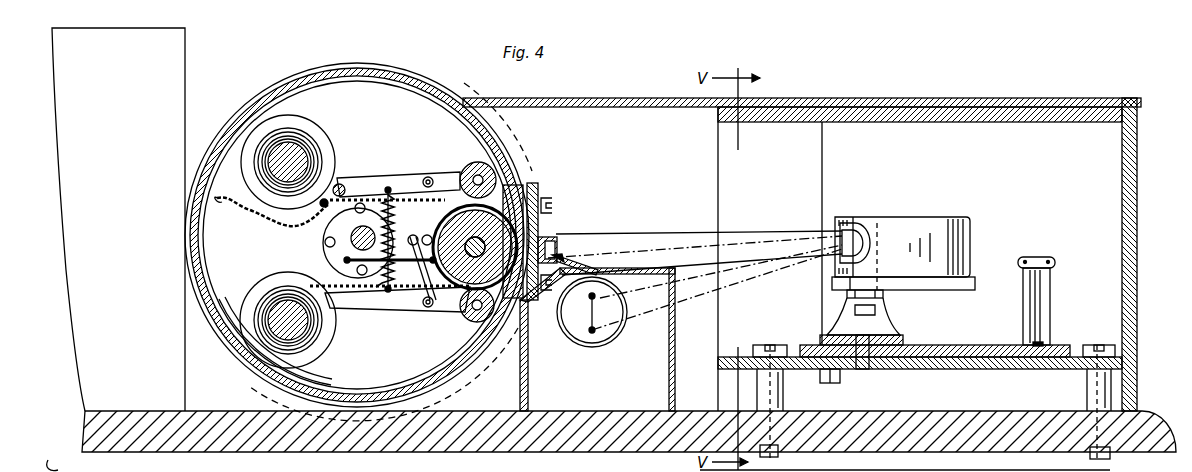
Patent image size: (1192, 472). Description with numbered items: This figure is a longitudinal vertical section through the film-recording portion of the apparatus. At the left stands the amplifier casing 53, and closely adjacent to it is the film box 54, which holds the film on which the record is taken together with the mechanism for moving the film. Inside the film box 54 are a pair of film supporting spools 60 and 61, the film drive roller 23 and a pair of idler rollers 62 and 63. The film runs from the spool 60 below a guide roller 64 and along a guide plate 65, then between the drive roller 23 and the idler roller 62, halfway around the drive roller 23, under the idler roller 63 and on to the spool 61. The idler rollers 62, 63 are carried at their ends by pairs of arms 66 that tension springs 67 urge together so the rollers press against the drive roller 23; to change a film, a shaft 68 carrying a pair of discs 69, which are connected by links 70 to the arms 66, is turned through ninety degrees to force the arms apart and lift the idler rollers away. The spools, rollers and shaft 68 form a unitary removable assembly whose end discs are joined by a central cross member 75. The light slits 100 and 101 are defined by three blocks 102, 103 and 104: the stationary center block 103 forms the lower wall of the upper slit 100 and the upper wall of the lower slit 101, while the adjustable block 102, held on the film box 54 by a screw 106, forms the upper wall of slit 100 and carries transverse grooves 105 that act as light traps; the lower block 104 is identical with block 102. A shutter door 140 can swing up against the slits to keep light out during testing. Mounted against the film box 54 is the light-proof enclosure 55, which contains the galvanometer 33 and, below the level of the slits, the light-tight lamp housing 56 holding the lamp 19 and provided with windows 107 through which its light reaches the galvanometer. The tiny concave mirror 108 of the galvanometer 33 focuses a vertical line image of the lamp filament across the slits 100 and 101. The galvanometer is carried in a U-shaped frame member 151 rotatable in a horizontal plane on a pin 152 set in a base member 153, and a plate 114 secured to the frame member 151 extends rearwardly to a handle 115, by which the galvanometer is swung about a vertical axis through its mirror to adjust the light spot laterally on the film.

The lamp 19 is at (605, 343).
The film drive roller 23 is at (429, 308).
The galvanometer 33 is at (923, 217).
The amplifier casing 53 is at (185, 66).
The film box 54 is at (352, 63).
The light-proof enclosure 55 is at (1134, 187).
The lamp housing 56 is at (676, 384).
The film supporting spool 60 is at (316, 125).
The film supporting spool 61 is at (258, 295).
The idler roller 62 is at (478, 164).
The idler roller 63 is at (478, 321).
The guide roller 64 is at (341, 184).
The guide plate 65 is at (322, 207).
The arms 66 is at (378, 178).
The tension springs 67 is at (425, 180).
The shaft 68 is at (420, 268).
The discs 69 is at (424, 235).
The links 70 is at (388, 294).
The central cross member 75 is at (345, 247).
The upper light slit 100 is at (556, 240).
The lower light slit 101 is at (560, 244).
The block 102 is at (546, 216).
The center block 103 is at (545, 305).
The lower block 104 is at (701, 291).
The grooves 105 is at (524, 185).
The screw 106 is at (540, 200).
The windows 107 is at (672, 298).
The concave mirror 108 is at (855, 232).
The plate 114 is at (973, 346).
The handle 115 is at (1040, 257).
The shutter door 140 is at (580, 258).
The U-shaped frame member 151 is at (900, 334).
The pin 152 is at (862, 352).
The base member 153 is at (992, 369).